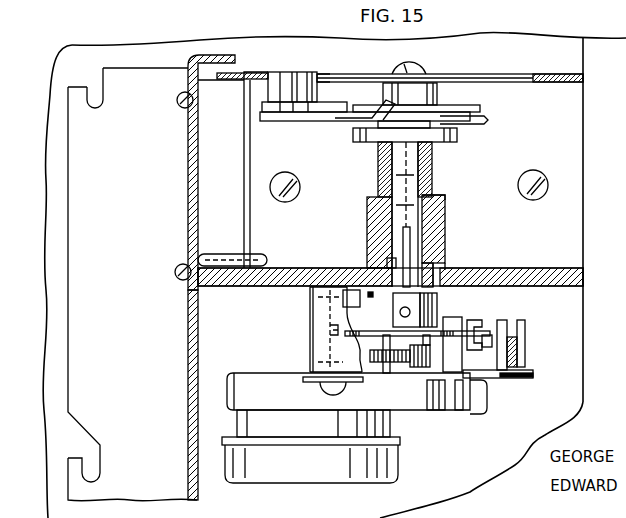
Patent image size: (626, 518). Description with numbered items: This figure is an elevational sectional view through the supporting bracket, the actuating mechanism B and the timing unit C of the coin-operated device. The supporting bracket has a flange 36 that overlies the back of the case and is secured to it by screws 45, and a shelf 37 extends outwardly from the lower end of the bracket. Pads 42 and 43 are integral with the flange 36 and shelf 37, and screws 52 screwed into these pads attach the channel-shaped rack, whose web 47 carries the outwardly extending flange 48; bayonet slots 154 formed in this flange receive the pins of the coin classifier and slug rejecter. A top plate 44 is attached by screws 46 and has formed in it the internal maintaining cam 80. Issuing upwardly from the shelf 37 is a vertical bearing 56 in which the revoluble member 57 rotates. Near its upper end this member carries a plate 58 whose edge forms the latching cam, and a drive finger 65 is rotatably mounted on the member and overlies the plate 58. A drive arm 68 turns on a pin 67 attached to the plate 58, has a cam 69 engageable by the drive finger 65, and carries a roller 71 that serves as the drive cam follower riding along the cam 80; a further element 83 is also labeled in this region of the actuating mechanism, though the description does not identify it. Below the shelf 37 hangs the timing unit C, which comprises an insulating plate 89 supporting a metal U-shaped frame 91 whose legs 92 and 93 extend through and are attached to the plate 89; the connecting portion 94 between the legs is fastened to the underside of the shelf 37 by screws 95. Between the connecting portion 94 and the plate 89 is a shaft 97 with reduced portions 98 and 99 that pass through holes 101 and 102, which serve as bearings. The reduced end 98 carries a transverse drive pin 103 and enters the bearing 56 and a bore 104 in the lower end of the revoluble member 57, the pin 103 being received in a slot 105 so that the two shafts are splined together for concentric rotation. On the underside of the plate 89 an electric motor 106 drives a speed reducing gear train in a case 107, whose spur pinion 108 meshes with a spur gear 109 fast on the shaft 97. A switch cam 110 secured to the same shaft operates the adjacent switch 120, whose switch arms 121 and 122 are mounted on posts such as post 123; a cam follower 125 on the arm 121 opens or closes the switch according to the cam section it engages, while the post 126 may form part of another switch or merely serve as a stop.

The flange 36 is at (572, 173).
The shelf 37 is at (533, 277).
The pad 42 is at (210, 123).
The pad 43 is at (238, 257).
The top plate 44 is at (562, 80).
The screws 45 is at (273, 183).
The screws 46 is at (413, 70).
The web 47 is at (190, 360).
The flange 48 is at (135, 76).
The screws 52 is at (180, 98).
The vertical bearing 56 is at (437, 228).
The revoluble member 57 is at (402, 184).
The plate 58 is at (488, 121).
The drive finger 65 is at (328, 121).
The pin 67 is at (233, 170).
The drive arm 68 is at (270, 108).
The cam 69 is at (330, 104).
The roller 71 is at (292, 82).
The internal cam 80 is at (537, 80).
The lever 83 is at (383, 107).
The insulating plate 89 is at (431, 395).
The U-shaped frame 91 is at (318, 340).
The leg 92 is at (322, 318).
The leg 93 is at (357, 310).
The connecting portion 94 is at (472, 272).
The screws 95 is at (350, 278).
The shaft 97 is at (460, 334).
The reduced portion 98 is at (393, 278).
The reduced portion 99 is at (387, 371).
The hole 101 is at (443, 270).
The hole 102 is at (380, 370).
The drive pin 103 is at (407, 240).
The bore 104 is at (387, 212).
The slot 105 is at (444, 198).
The electric motor 106 is at (383, 460).
The case 107 is at (477, 397).
The spur pinion 108 is at (423, 377).
The spur gear 109 is at (340, 361).
The switch cam 110 is at (443, 333).
The switch 120 is at (489, 362).
The switch arm 121 is at (491, 343).
The switch arm 122 is at (502, 328).
The post 123 is at (493, 358).
The cam follower 125 is at (460, 393).
The post 126 is at (523, 340).
The bayonet slots 154 is at (93, 108).
The actuating mechanism B is at (447, 105).
The timing unit C is at (230, 403).